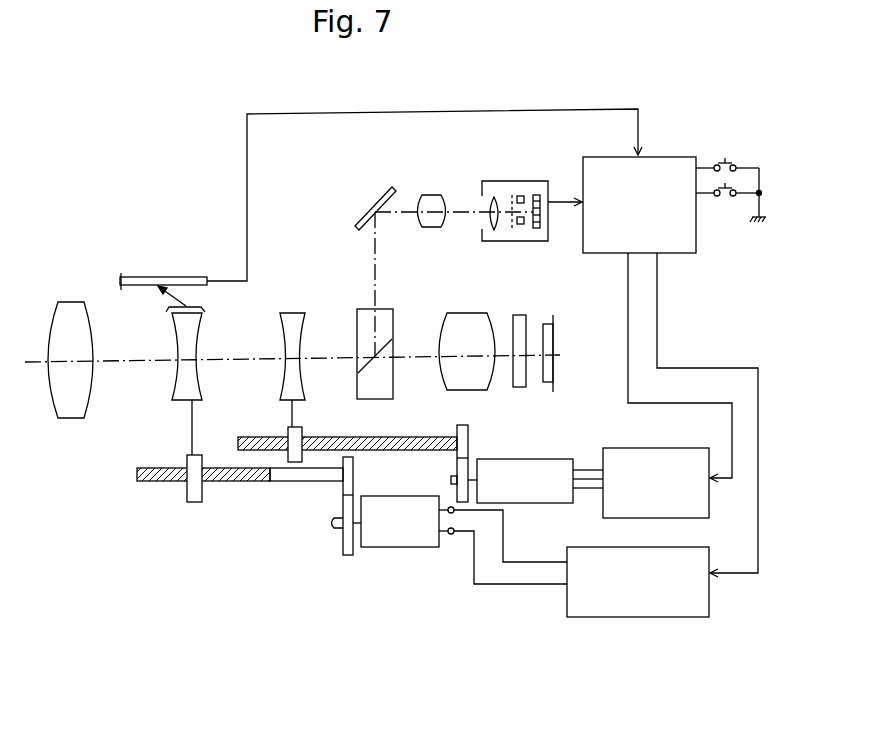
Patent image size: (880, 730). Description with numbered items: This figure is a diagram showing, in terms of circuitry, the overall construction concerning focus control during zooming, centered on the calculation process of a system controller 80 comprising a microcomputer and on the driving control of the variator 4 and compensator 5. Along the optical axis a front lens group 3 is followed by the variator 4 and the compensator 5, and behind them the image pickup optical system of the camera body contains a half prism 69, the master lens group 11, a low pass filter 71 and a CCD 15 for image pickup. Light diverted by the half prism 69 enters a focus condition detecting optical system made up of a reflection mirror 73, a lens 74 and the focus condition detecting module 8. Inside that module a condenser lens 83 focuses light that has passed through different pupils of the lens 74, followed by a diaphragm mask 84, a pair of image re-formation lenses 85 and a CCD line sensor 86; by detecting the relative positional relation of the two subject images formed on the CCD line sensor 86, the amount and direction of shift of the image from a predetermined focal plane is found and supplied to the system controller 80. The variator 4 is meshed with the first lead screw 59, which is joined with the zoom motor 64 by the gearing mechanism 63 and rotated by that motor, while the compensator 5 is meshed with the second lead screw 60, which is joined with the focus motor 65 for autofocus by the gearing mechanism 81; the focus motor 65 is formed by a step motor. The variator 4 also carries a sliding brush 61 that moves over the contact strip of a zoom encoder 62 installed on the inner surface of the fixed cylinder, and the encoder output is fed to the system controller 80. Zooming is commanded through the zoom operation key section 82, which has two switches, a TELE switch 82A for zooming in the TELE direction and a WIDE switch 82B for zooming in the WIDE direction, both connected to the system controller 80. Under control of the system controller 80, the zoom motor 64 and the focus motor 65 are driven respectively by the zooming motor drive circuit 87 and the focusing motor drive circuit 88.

The front lens group 3 is at (72, 420).
The variator 4 is at (179, 403).
The compensator 5 is at (293, 311).
The focus condition detecting module 8 is at (493, 197).
The master lens group 11 is at (448, 311).
The CCD for image pickup 15 is at (555, 332).
The first lead screw 59 is at (278, 483).
The second lead screw 60 is at (422, 436).
The sliding brush 61 is at (178, 284).
The zoom encoder 62 is at (136, 276).
The gearing mechanism 63 is at (338, 533).
The zoom motor 64 is at (399, 549).
The focus motor 65 is at (540, 505).
The half prism 69 is at (363, 307).
The low pass filter 71 is at (520, 390).
The reflection mirror 73 is at (387, 190).
The lens 74 is at (428, 193).
The system controller 80 is at (657, 155).
The gearing mechanism 81 is at (470, 436).
The zoom operation key section 82 is at (728, 177).
The TELE switch 82A is at (721, 152).
The WIDE switch 82B is at (724, 205).
The condenser lens 83 is at (493, 232).
The diaphragm mask 84 is at (512, 231).
The image re-formation lenses 85 is at (522, 196).
The CCD line sensor 86 is at (542, 217).
The zooming motor drive circuit 87 is at (630, 619).
The focusing motor drive circuit 88 is at (613, 447).